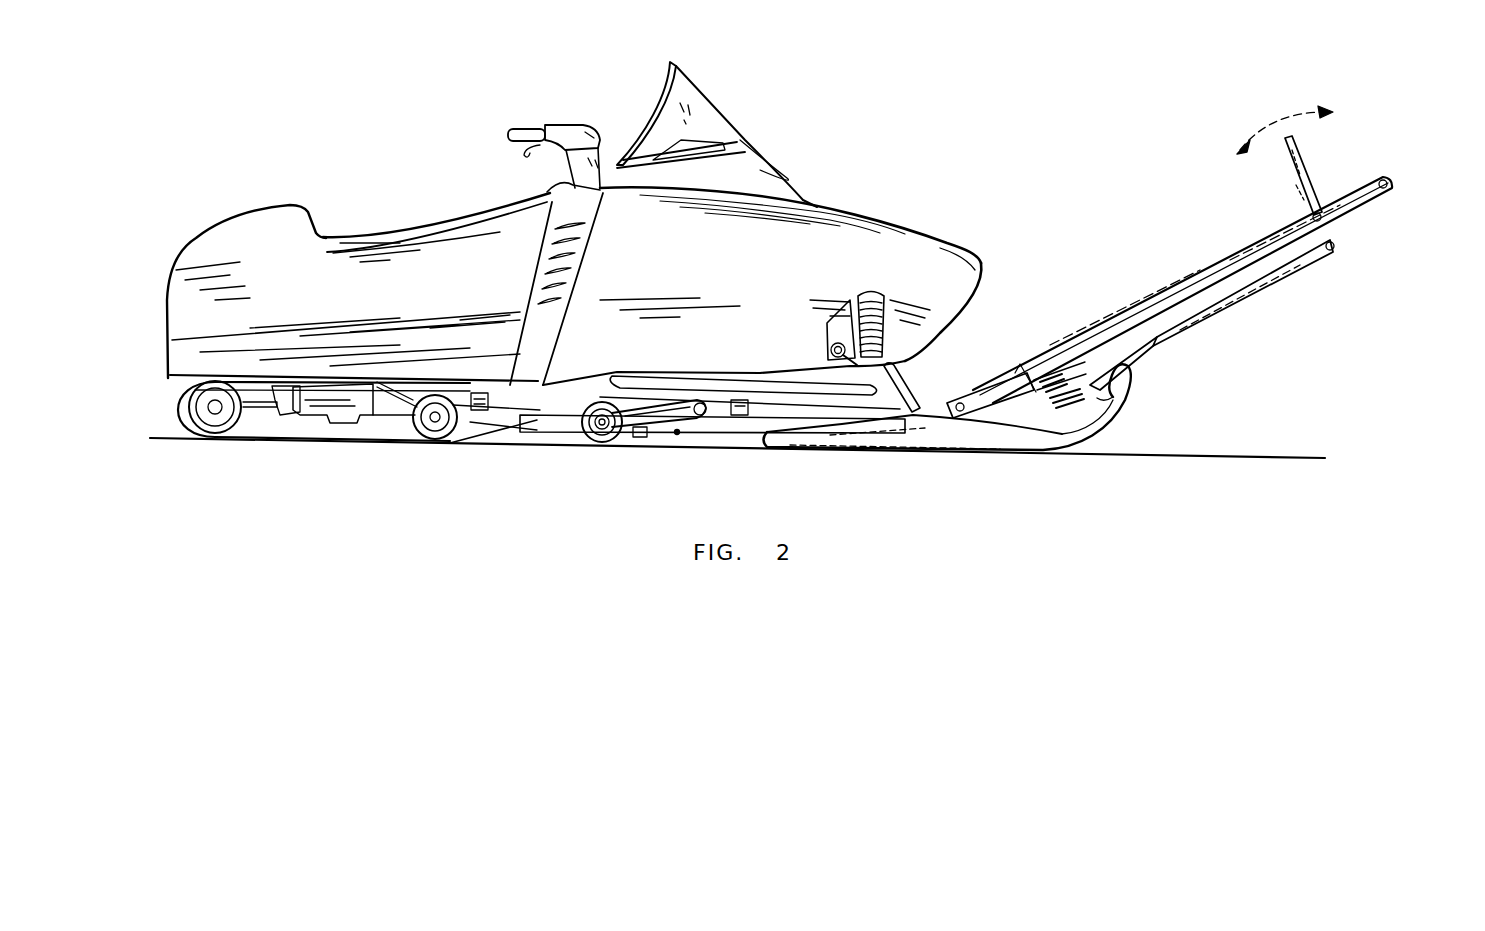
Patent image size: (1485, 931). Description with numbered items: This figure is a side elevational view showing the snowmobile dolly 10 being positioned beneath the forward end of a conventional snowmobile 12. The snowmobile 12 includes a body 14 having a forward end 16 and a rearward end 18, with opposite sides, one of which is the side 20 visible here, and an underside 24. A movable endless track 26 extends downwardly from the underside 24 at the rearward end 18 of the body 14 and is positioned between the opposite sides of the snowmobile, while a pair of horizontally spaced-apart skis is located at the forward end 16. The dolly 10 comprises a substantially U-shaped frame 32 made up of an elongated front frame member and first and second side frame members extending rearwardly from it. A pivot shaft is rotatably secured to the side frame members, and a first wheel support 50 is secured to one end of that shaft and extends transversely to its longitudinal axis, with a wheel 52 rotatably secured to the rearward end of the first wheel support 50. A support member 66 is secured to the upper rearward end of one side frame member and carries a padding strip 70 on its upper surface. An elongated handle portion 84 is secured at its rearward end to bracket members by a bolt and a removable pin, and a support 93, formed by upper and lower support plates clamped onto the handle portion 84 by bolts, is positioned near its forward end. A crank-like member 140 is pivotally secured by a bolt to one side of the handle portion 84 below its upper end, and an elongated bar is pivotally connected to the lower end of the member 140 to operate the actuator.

The snowmobile dolly 10 is at (1360, 270).
The snowmobile 12 is at (875, 213).
The body 14 is at (380, 285).
The forward end 16 is at (985, 262).
The rearward end 18 is at (156, 306).
The opposite side 20 is at (455, 290).
The underside 24 is at (367, 383).
The movable endless track 26 is at (495, 432).
The U-shaped frame 32 is at (740, 395).
The first wheel support 50 is at (656, 424).
The wheel 52 is at (593, 445).
The support member 66 is at (470, 424).
The padding strip 70 is at (487, 388).
The handle portion 84 is at (1157, 290).
The support 93 is at (989, 378).
The crank-like member 140 is at (1293, 178).